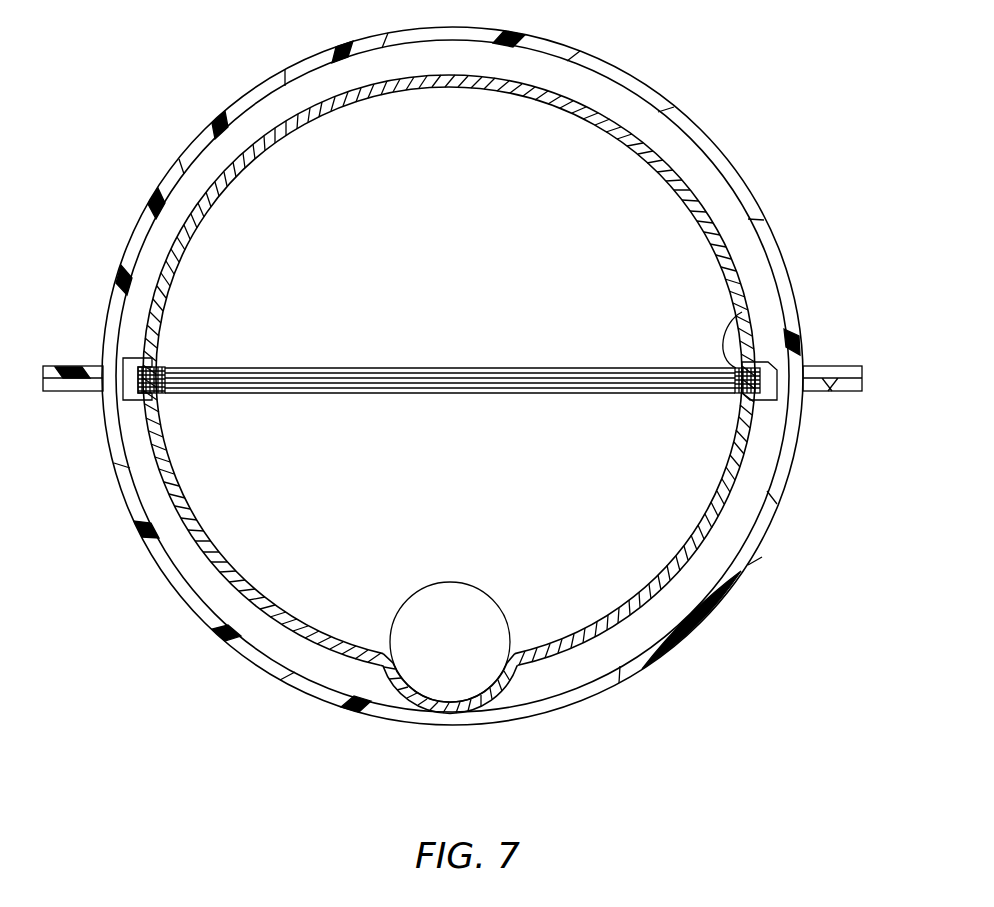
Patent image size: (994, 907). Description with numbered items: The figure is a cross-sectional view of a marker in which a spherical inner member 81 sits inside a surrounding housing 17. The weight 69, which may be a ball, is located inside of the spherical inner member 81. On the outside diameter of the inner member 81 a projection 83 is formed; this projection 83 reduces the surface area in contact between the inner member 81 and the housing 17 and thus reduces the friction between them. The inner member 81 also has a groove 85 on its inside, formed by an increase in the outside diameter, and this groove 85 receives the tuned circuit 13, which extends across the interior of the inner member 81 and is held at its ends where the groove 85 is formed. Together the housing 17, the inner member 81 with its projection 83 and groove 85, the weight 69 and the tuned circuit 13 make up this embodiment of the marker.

The housing 17 is at (180, 155).
The spherical inner member 81 is at (655, 153).
The groove 85 is at (742, 312).
The tuned circuit 13 is at (415, 373).
The weight 69 is at (418, 618).
The projection 83 is at (493, 697).